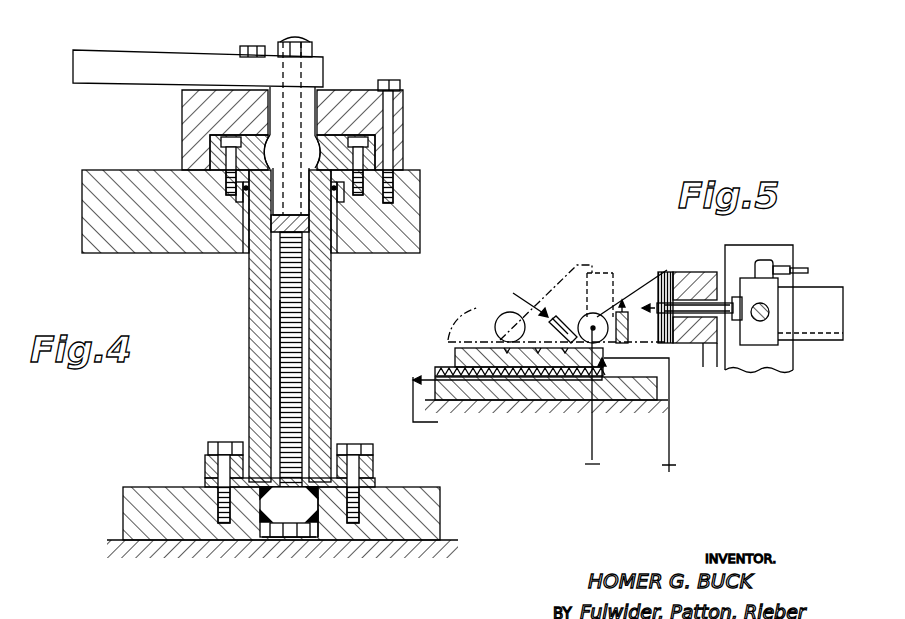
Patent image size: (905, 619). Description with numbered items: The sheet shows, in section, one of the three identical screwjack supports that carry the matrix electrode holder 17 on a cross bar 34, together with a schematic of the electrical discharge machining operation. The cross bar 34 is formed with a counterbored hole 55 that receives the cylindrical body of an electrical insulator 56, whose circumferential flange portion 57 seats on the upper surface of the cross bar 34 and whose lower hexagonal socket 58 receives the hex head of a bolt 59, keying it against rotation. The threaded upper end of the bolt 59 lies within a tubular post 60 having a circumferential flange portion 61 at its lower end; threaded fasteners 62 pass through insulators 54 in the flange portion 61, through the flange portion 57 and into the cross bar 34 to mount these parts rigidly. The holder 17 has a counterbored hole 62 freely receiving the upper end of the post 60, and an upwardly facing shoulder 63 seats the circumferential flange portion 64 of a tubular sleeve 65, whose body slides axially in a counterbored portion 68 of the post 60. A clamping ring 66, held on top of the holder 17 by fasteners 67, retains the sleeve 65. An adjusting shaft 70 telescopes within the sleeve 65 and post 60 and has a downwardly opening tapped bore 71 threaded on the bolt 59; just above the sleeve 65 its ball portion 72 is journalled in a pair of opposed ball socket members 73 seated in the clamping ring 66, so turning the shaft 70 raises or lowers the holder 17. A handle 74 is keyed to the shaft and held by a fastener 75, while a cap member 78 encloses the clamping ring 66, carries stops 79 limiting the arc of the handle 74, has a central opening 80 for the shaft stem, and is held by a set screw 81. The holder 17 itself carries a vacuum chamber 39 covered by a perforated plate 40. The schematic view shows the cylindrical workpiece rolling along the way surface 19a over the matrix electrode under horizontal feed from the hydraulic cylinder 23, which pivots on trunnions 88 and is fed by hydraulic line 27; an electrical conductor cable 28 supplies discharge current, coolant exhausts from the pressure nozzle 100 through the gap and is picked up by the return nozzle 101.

In FIG. 4, the matrix electrode holder 17 is at (422, 193).
In FIG. 5, the way surface 19a is at (557, 325).
In FIG. 5, the hydraulic cylinder 23 is at (825, 343).
In FIG. 5, the hydraulic fluid line 27 is at (672, 441).
In FIG. 5, the electrical conductor cable 28 is at (593, 430).
In FIG. 4, the cross bar 34 is at (431, 487).
In FIG. 5, the vacuum chamber 39 is at (565, 398).
In FIG. 5, the perforated plate 40 is at (436, 372).
In FIG. 4, the insulator 54 is at (207, 470).
In FIG. 4, the counterbored hole 55 is at (247, 565).
In FIG. 4, the electrical insulator 56 is at (322, 520).
In FIG. 4, the circumferential flange portion 57 is at (373, 487).
In FIG. 4, the hexagonal socket 58 is at (253, 527).
In FIG. 4, the bolt 59 is at (300, 380).
In FIG. 4, the tubular post 60 is at (333, 293).
In FIG. 4, the circumferential flange portion 61 is at (207, 457).
In FIG. 4, the threaded fasteners 62 is at (243, 262).
In FIG. 4, the upwardly facing shoulder 63 is at (362, 255).
In FIG. 4, the circumferential flange portion 64 is at (212, 255).
In FIG. 4, the tubular sleeve 65 is at (237, 253).
In FIG. 4, the clamping ring 66 is at (220, 152).
In FIG. 4, the fasteners 67 is at (176, 252).
In FIG. 4, the counterbored portion 68 is at (334, 266).
In FIG. 4, the adjusting shaft 70 is at (272, 327).
In FIG. 4, the tapped bore 71 is at (281, 355).
In FIG. 4, the ball portion 72 is at (330, 126).
In FIG. 4, the ball socket members 73 is at (257, 133).
In FIG. 4, the handle 74 is at (119, 51).
In FIG. 4, the fastener 75 is at (306, 42).
In FIG. 4, the cap member 78 is at (177, 125).
In FIG. 4, the stops 79 is at (242, 48).
In FIG. 4, the central opening 80 is at (318, 98).
In FIG. 4, the set screw 81 is at (400, 84).
In FIG. 5, the trunnions 88 is at (767, 298).
In FIG. 5, the pressure nozzle 100 is at (572, 312).
In FIG. 5, the return nozzle 101 is at (625, 300).